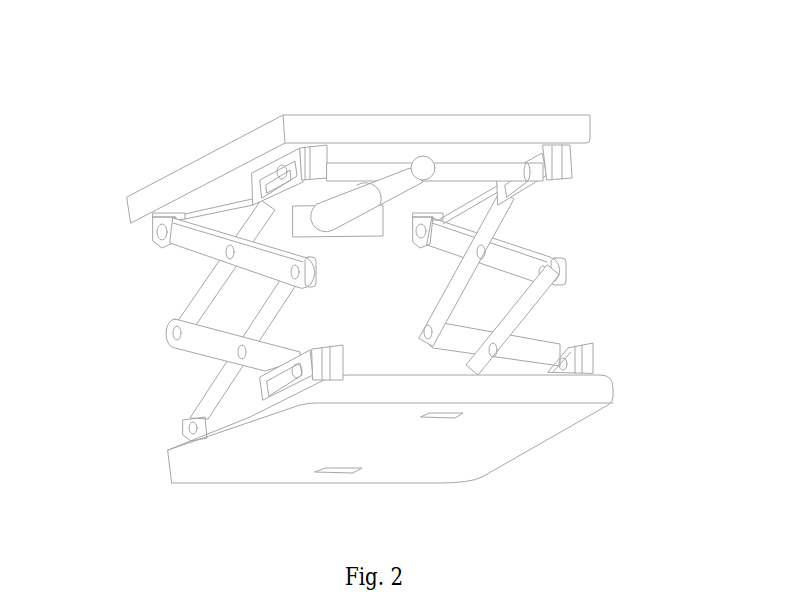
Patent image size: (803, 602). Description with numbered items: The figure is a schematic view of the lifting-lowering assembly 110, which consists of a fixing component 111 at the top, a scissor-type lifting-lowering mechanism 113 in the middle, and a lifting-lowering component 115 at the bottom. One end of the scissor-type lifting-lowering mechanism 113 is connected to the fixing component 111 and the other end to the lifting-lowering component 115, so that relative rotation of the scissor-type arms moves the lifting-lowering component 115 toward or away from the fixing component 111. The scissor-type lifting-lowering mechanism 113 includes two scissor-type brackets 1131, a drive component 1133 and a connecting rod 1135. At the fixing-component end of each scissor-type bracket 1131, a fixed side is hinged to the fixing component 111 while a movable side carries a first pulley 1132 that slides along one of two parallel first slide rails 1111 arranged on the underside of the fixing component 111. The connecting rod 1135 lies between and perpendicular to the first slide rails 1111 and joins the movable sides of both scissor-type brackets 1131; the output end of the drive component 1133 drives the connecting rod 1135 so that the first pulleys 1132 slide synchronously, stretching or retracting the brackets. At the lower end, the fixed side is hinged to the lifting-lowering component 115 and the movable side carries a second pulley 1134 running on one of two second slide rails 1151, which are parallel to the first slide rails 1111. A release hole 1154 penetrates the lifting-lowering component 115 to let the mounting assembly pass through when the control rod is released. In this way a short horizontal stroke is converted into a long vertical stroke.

The lifting-lowering assembly 110 is at (352, 38).
The fixing component 111 is at (155, 188).
The first slide rail 1111 is at (603, 167).
The scissor-type lifting-lowering mechanism 113 is at (116, 353).
The scissor-type bracket 1131 is at (215, 277).
The first pulley 1132 is at (287, 170).
The drive component 1133 is at (343, 222).
The second pulley 1134 is at (336, 360).
The connecting rod 1135 is at (497, 170).
The lifting-lowering component 115 is at (492, 458).
The second slide rail 1151 is at (625, 334).
The release hole 1154 is at (317, 491).